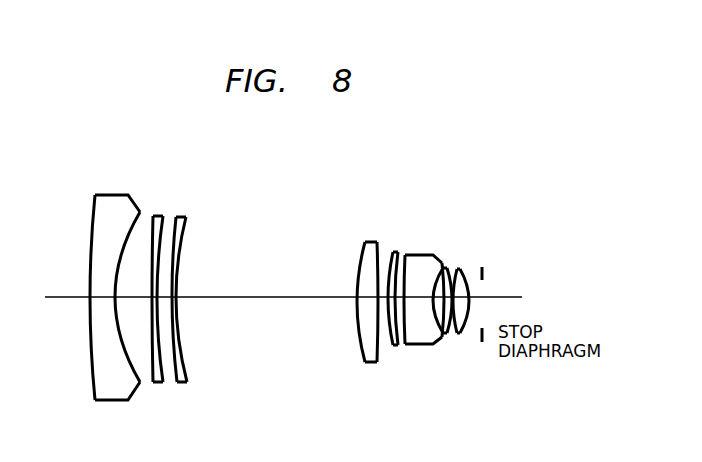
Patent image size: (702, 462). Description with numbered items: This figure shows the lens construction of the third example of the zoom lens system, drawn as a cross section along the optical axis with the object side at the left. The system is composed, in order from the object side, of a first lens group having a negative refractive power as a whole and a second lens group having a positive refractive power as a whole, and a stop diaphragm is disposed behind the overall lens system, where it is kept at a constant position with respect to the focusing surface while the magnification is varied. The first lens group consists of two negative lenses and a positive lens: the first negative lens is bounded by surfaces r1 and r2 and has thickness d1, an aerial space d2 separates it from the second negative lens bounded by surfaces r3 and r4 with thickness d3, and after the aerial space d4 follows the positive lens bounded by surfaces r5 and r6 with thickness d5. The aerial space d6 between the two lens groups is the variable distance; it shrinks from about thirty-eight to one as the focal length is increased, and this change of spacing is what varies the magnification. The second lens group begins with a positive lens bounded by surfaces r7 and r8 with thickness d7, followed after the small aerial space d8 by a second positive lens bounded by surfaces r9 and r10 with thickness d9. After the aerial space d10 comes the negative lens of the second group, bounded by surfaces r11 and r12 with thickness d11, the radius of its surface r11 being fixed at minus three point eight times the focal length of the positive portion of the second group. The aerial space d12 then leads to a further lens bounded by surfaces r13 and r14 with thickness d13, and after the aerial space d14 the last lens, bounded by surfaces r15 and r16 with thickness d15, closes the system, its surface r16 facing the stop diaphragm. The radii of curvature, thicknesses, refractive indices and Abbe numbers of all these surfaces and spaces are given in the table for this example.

The radius of curvature of lens surface 1 r1 is at (90, 212).
The radius of curvature of lens surface 2 r2 is at (130, 228).
The radius of curvature of lens surface 3 r3 is at (152, 215).
The radius of curvature of lens surface 4 r4 is at (158, 228).
The radius of curvature of lens surface 5 r5 is at (173, 218).
The radius of curvature of lens surface 6 r6 is at (187, 220).
The radius of curvature of lens surface 7 r7 is at (366, 250).
The radius of curvature of lens surface 8 r8 is at (377, 242).
The radius of curvature of lens surface 9 r9 is at (394, 251).
The radius of curvature of lens surface 10 r10 is at (400, 251).
The radius of curvature of lens surface 11 r11 is at (407, 255).
The radius of curvature of lens surface 12 r12 is at (430, 256).
The radius of curvature of lens surface 13 r13 is at (444, 267).
The radius of curvature of lens surface 14 r14 is at (450, 267).
The radius of curvature of lens surface 15 r15 is at (458, 269).
The radius of curvature of lens surface 16 r16 is at (465, 270).
The lens thickness D1 d1 is at (102, 302).
The aerial space D2 d2 is at (137, 299).
The lens thickness D3 d3 is at (155, 303).
The aerial space D4 d4 is at (165, 305).
The lens thickness D5 d5 is at (177, 305).
The variable aerial space D6 d6 is at (253, 297).
The lens thickness D7 d7 is at (355, 308).
The aerial space D8 d8 is at (376, 303).
The lens thickness D9 d9 is at (388, 320).
The aerial space D10 d10 is at (400, 327).
The lens thickness D11 d11 is at (415, 345).
The aerial space D12 d12 is at (436, 340).
The lens thickness D13 d13 is at (454, 335).
The aerial space D14 d14 is at (462, 335).
The lens thickness D15 d15 is at (468, 335).